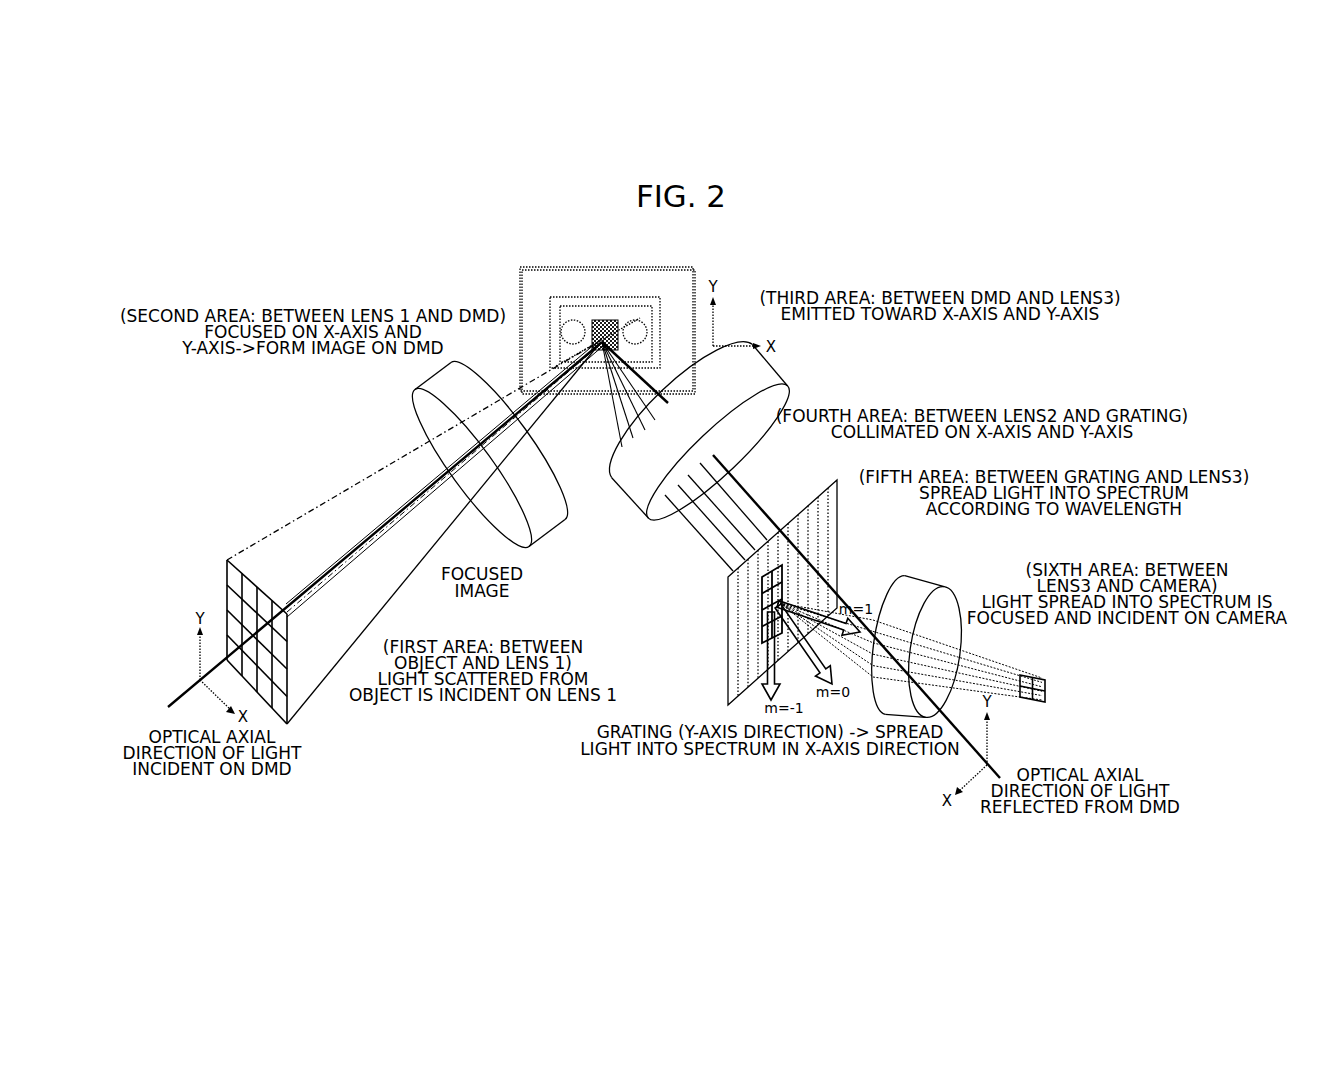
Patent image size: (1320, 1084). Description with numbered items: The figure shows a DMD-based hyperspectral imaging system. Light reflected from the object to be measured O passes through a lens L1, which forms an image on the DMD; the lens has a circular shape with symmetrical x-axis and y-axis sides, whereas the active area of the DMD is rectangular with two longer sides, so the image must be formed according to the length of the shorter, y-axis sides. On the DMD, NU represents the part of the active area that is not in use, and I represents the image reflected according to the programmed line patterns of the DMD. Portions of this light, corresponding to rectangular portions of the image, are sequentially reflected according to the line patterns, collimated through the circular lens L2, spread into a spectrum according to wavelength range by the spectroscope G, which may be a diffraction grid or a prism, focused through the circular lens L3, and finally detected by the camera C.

The unused part of active area of DMD NU is at (626, 314).
The image reflected according to DMD line patterns I is at (570, 347).
The lens L1 is at (421, 411).
The circular lens L2 is at (781, 397).
The circular lens L3 is at (927, 578).
The object to be measured O is at (226, 572).
The spectroscope G is at (733, 617).
The camera C is at (1052, 683).